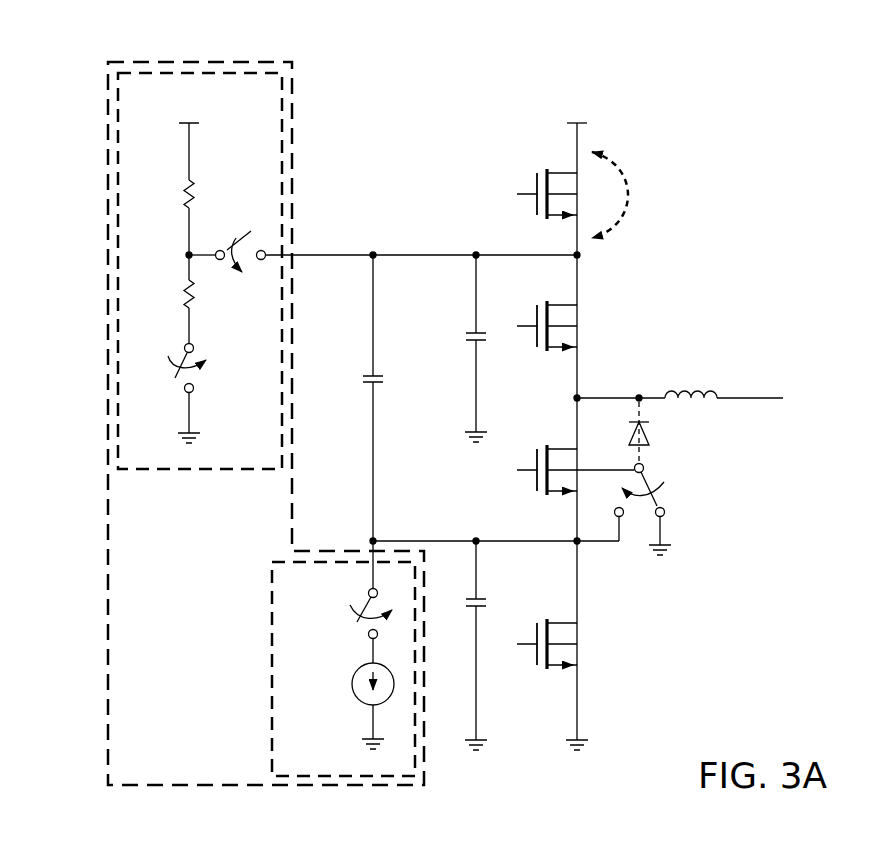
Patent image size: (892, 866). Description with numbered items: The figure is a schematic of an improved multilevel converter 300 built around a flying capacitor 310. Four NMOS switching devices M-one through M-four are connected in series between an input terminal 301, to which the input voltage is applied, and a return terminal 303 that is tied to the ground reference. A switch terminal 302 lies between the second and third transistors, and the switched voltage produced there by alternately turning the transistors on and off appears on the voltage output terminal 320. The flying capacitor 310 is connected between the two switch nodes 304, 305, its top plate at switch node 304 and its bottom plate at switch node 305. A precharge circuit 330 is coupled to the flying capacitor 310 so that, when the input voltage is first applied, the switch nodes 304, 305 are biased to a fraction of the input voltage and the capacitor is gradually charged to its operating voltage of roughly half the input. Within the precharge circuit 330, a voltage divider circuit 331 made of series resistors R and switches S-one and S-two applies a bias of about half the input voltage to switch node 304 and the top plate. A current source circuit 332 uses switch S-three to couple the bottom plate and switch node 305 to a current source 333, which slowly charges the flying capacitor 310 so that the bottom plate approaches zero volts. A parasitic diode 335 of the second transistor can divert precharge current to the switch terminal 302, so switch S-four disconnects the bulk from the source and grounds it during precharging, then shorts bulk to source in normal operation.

The multilevel converter 300 is at (738, 88).
The input terminal 301 is at (590, 125).
The switch terminal 302 is at (568, 398).
The return terminal 303 is at (588, 745).
The switch node 304 is at (583, 262).
The switch node 305 is at (583, 548).
The flying capacitor 310 is at (384, 378).
The voltage output terminal 320 is at (765, 400).
The precharge circuit 330 is at (104, 422).
The voltage divider circuit 331 is at (197, 476).
The current source circuit 332 is at (262, 672).
The current source 333 is at (351, 684).
The parasitic diode 335 is at (652, 434).